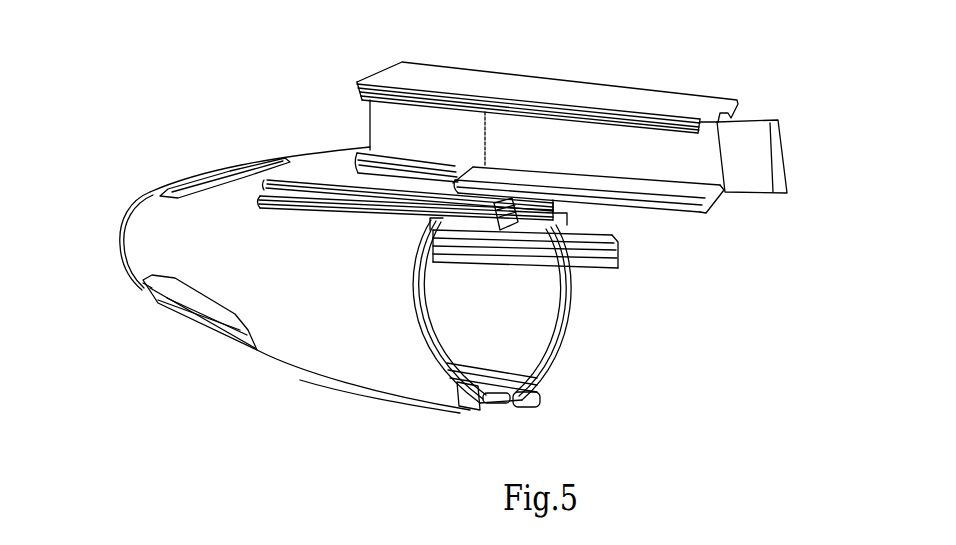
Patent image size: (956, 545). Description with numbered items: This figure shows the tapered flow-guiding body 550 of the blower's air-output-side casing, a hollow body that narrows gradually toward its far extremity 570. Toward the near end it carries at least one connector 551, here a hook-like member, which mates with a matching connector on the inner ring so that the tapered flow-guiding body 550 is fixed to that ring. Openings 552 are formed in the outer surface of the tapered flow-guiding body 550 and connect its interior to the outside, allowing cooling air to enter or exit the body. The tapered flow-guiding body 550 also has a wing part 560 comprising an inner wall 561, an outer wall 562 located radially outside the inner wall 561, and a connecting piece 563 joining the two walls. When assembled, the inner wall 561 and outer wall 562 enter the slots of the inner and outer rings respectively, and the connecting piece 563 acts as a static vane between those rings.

The tapered flow-guiding body 550 is at (337, 337).
The connector 551 is at (622, 255).
The opening 552 is at (223, 177).
The wing part 560 is at (382, 115).
The inner wall 561 is at (707, 200).
The outer wall 562 is at (583, 87).
The connecting piece 563 is at (723, 153).
The extremity 570 is at (120, 237).